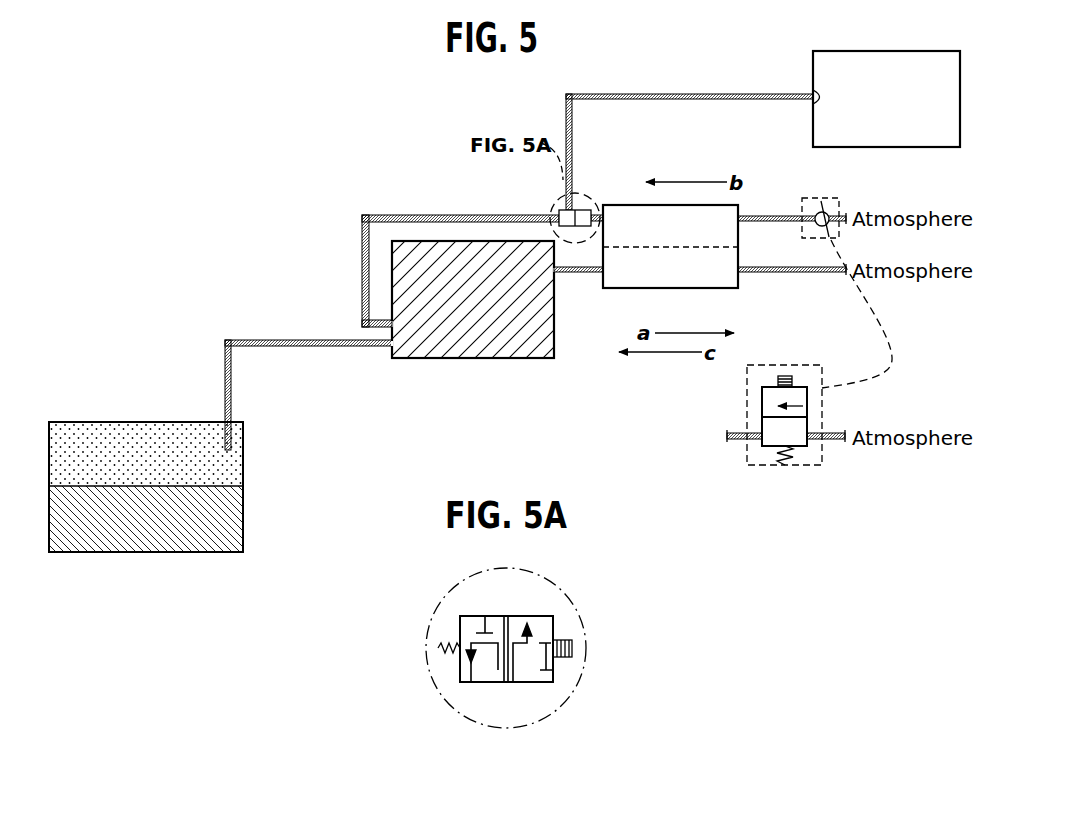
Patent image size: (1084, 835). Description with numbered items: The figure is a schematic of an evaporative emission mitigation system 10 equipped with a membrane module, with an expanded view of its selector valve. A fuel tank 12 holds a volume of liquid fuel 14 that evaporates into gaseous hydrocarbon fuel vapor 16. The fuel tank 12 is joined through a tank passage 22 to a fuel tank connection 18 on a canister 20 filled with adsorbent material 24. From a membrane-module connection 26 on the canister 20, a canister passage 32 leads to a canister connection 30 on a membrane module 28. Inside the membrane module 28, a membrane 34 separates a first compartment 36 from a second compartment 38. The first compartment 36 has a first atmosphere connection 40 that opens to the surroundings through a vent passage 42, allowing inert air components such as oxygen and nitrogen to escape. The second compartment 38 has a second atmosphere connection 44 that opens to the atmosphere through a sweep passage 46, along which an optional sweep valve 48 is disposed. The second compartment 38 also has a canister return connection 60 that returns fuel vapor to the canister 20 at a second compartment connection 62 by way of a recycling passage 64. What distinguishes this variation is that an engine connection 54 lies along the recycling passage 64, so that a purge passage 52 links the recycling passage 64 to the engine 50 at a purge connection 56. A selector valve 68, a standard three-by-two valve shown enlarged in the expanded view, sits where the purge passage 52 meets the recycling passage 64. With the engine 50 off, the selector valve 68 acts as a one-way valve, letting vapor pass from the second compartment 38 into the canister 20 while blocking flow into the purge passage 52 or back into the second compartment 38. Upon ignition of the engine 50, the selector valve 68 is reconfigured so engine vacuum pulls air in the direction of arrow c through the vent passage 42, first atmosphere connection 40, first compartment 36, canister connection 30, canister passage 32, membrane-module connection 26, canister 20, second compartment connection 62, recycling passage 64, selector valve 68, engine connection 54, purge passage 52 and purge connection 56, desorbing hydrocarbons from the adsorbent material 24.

In FIG. 5, the evaporative emission mitigation system 10 is at (256, 174).
In FIG. 5, the fuel tank 12 is at (260, 488).
In FIG. 5, the liquid fuel 14 is at (155, 546).
In FIG. 5, the fuel vapor 16 is at (150, 432).
In FIG. 5, the fuel tank connection 18 is at (410, 352).
In FIG. 5, the canister 20 is at (505, 330).
In FIG. 5, the tank passage 22 is at (287, 340).
In FIG. 5, the adsorbent material 24 is at (485, 350).
In FIG. 5, the membrane-module connection 26 is at (553, 268).
In FIG. 5, the membrane module 28 is at (745, 300).
In FIG. 5, the canister connection 30 is at (699, 233).
In FIG. 5, the canister passage 32 is at (570, 274).
In FIG. 5, the membrane 34 is at (703, 247).
In FIG. 5, the first compartment 36 is at (675, 283).
In FIG. 5, the second compartment 38 is at (683, 215).
In FIG. 5, the first atmosphere connection 40 is at (740, 275).
In FIG. 5, the vent passage 42 is at (800, 272).
In FIG. 5, the second atmosphere connection 44 is at (740, 215).
In FIG. 5, the sweep passage 46 is at (783, 213).
In FIG. 5, the sweep valve 48 is at (826, 210).
In FIG. 5, the engine 50 is at (894, 44).
In FIG. 5, the purge passage 52 is at (566, 115).
In FIG. 5, the engine connection 54 is at (556, 198).
In FIG. 5, the purge connection 56 is at (826, 90).
In FIG. 5A, the purge connection 56 is at (483, 625).
In FIG. 5, the canister return connection 60 is at (605, 220).
In FIG. 5A, the canister return connection 60 is at (492, 667).
In FIG. 5, the second compartment connection 62 is at (396, 320).
In FIG. 5, the recycling passage 64 is at (448, 215).
In FIG. 5A, the recycling passage 64 is at (460, 670).
In FIG. 5, the selector valve 68 is at (582, 209).
In FIG. 5A, the selector valve 68 is at (513, 616).